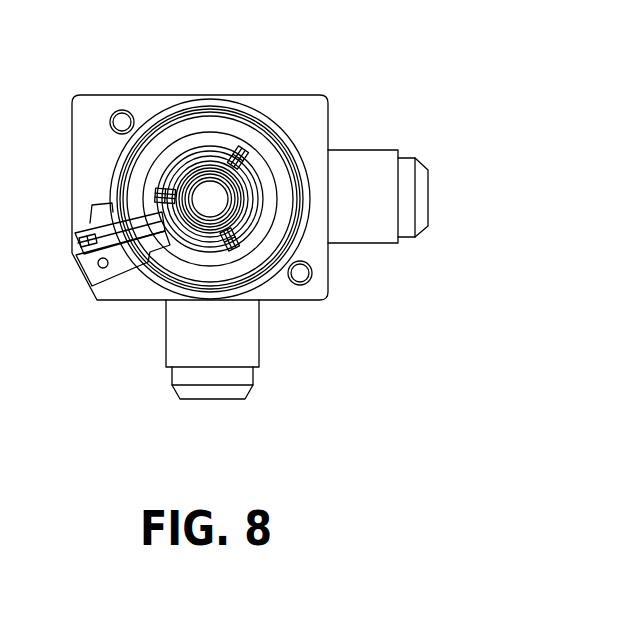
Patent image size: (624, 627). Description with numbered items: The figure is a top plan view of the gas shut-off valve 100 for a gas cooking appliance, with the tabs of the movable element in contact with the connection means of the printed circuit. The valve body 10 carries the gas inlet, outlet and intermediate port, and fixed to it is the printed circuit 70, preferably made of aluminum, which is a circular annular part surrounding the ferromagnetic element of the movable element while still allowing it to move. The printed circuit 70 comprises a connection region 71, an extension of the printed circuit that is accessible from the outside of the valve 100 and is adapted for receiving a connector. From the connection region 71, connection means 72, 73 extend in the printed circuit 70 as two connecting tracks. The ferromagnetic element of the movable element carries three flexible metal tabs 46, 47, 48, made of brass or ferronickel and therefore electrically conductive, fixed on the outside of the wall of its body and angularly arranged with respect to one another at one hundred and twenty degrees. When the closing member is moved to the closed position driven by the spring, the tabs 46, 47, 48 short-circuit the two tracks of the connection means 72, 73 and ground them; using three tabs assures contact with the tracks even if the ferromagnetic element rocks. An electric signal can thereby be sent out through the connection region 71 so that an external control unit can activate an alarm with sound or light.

The gas shut-off valve 100 is at (367, 112).
The valve body 10 is at (293, 127).
The printed circuit 70 is at (273, 235).
The flexible metal tab 46 is at (152, 180).
The flexible metal tab 47 is at (236, 148).
The flexible metal tab 48 is at (245, 253).
The connection means 72 is at (87, 235).
The connection means 73 is at (89, 278).
The connection region 71 is at (118, 257).